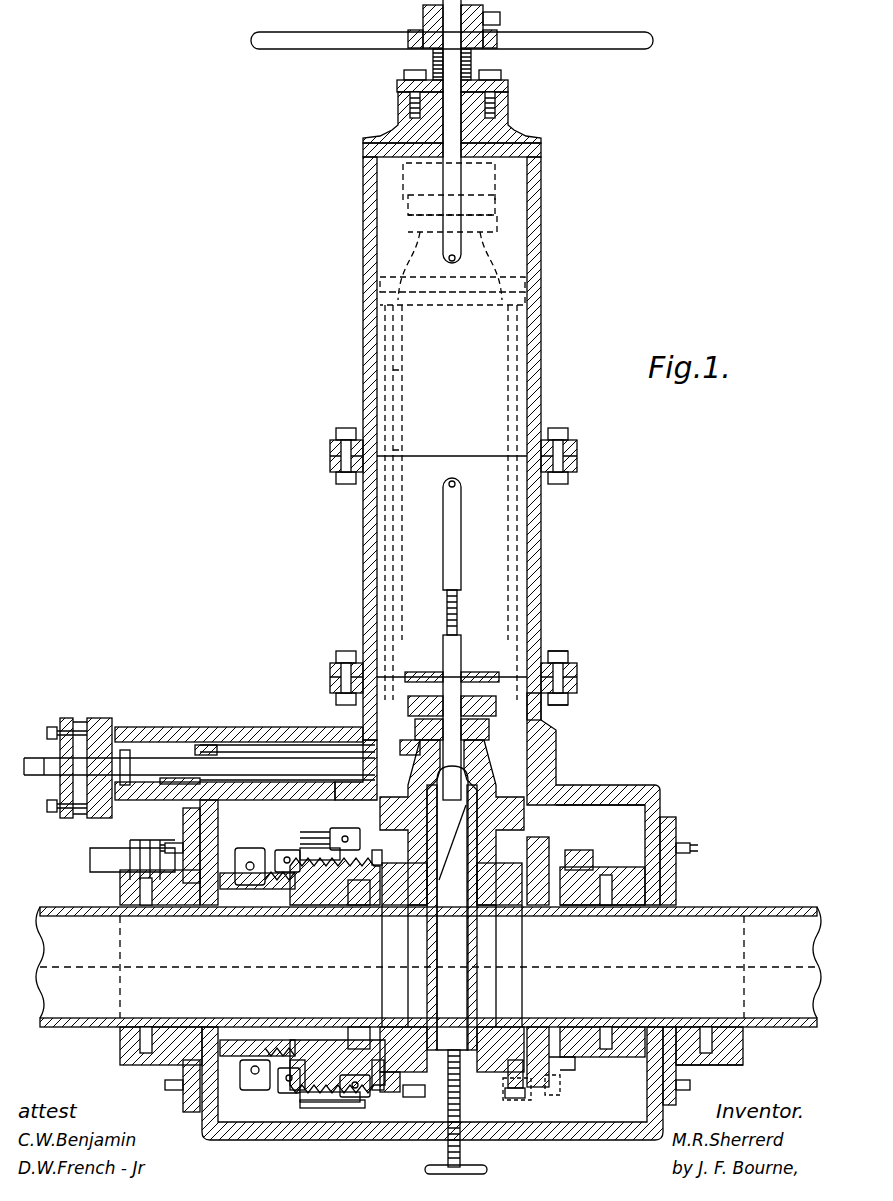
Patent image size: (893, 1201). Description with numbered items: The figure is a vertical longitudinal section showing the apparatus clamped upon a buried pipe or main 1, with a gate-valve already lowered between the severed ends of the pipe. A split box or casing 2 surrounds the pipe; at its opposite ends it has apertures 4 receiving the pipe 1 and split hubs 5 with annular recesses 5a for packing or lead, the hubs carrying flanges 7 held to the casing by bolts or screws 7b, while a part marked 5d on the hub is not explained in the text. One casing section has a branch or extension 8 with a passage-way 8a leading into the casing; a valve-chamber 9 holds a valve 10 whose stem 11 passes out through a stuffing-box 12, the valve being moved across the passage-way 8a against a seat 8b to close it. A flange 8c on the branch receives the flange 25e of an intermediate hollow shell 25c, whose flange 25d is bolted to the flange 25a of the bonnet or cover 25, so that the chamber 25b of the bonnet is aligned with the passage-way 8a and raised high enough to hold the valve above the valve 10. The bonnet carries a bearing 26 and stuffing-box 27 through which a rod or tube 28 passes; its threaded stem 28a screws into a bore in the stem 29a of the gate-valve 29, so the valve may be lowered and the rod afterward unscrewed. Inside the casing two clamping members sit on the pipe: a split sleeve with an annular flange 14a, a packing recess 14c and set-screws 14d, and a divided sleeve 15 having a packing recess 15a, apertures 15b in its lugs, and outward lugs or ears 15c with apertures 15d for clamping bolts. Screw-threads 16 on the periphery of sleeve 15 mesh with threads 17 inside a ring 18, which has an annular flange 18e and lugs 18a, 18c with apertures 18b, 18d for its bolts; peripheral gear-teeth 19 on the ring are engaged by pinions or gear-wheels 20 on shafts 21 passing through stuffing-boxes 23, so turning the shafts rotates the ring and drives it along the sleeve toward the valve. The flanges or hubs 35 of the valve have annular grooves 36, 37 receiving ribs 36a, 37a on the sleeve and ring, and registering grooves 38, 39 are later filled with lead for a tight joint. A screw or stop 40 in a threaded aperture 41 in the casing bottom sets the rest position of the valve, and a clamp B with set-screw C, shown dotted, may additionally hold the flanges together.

The pipe or main 1 is at (428, 967).
The box or casing 2 is at (382, 832).
The apertures 4 is at (431, 989).
The hubs 5 is at (165, 1050).
The annular recesses 5a is at (715, 1030).
The lower flange 5d is at (716, 1068).
The flanges 7 is at (185, 822).
The bolts or screws 7b is at (439, 951).
The branch or extension 8 is at (557, 734).
The passage-way 8a is at (463, 706).
The seat 8b is at (400, 735).
The flange 8c is at (578, 684).
The valve-chamber 9 is at (245, 750).
The valve 10 is at (213, 744).
The stem 11 is at (199, 767).
The stuffing-box 12 is at (79, 752).
The annular flange 14a is at (570, 1067).
The annular recess 14c is at (602, 926).
The set-screws 14d is at (565, 1030).
The divided sleeve 15 is at (325, 905).
The annular recess 15a is at (262, 1028).
The apertures 15b is at (352, 1030).
The lugs or ears 15c is at (255, 860).
The apertures 15d is at (365, 905).
The screw-threads 16 is at (270, 905).
The threads 17 is at (290, 905).
The ring 18 is at (330, 976).
The lugs 18a is at (354, 1098).
The apertures 18b is at (373, 1090).
The lugs 18c is at (281, 977).
The apertures 18d is at (333, 975).
The annular flange 18e is at (383, 847).
The peripheral gear-teeth 19 is at (340, 1145).
The pinions or gear-wheels 20 is at (330, 832).
The shafts 21 is at (80, 846).
The stuffing-boxes 23 is at (143, 854).
The bonnet or cover 25 is at (541, 390).
The flange 25a is at (473, 447).
The chamber 25b is at (527, 412).
The intermediate hollow case or shell 25c is at (455, 626).
The flange 25d is at (580, 468).
The flange 25e is at (568, 668).
The bearing 26 is at (452, 42).
The stuffing-box 27 is at (398, 90).
The rod or tube 28 is at (430, 534).
The threaded stem 28a is at (460, 606).
The valve 29 is at (539, 860).
The stem 29a is at (460, 648).
The flanges or hubs 35 is at (452, 822).
The annular groove 36 is at (515, 1060).
The annular rib 36a is at (576, 852).
The annular groove 37 is at (396, 1068).
The annular rib 37a is at (398, 1080).
The annular groove 38 is at (451, 1092).
The annular groove 39 is at (540, 1104).
The screw or stop 40 is at (449, 1140).
The threaded aperture 41 is at (466, 1140).
The clamp B is at (505, 1088).
The set-screw C is at (568, 1089).